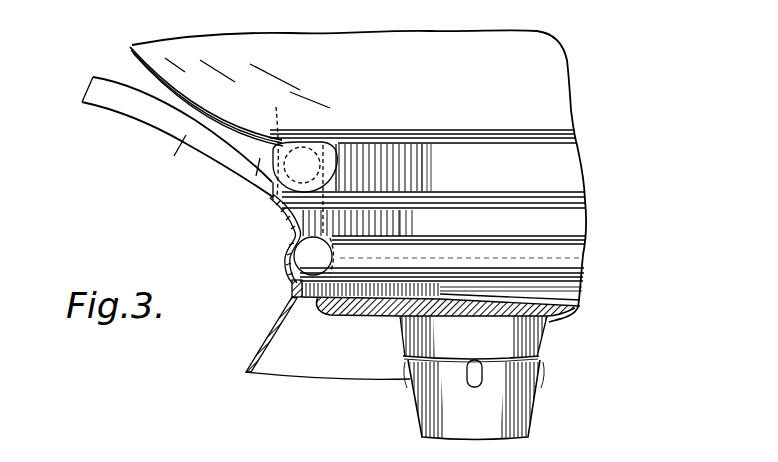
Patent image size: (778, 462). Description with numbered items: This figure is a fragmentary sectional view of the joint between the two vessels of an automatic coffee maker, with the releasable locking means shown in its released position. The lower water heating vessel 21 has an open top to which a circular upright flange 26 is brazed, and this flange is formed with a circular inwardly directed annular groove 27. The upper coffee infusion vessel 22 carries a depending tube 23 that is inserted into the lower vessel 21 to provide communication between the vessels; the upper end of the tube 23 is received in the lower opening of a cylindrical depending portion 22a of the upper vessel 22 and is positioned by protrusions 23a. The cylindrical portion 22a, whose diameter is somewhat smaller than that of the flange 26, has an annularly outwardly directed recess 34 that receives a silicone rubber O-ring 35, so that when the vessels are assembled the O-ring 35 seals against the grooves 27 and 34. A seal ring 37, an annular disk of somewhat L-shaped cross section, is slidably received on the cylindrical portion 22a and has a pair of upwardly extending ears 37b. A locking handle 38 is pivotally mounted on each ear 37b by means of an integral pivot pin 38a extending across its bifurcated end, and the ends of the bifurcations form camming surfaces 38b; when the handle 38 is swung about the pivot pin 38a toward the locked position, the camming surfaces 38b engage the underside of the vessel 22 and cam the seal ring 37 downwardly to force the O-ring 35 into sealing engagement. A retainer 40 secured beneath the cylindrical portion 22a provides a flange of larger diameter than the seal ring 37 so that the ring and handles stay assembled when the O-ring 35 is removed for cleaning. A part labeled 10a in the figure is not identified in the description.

The strip 10a is at (308, 298).
The lower water heating vessel 21 is at (263, 333).
The upper coffee infusion vessel 22 is at (550, 85).
The cylindrical depending portion 22a is at (572, 174).
The depending tube 23 is at (433, 423).
The protrusions 23a is at (484, 394).
The circular upright flange 26 is at (280, 216).
The annular groove 27 is at (283, 240).
The annular recess 34 is at (428, 244).
The O-ring 35 is at (560, 258).
The seal ring 37 is at (472, 198).
The ears 37b is at (267, 141).
The locking handle 38 is at (177, 138).
The pivot pin 38a is at (308, 145).
The camming surfaces 38b is at (342, 143).
The retainer 40 is at (367, 311).